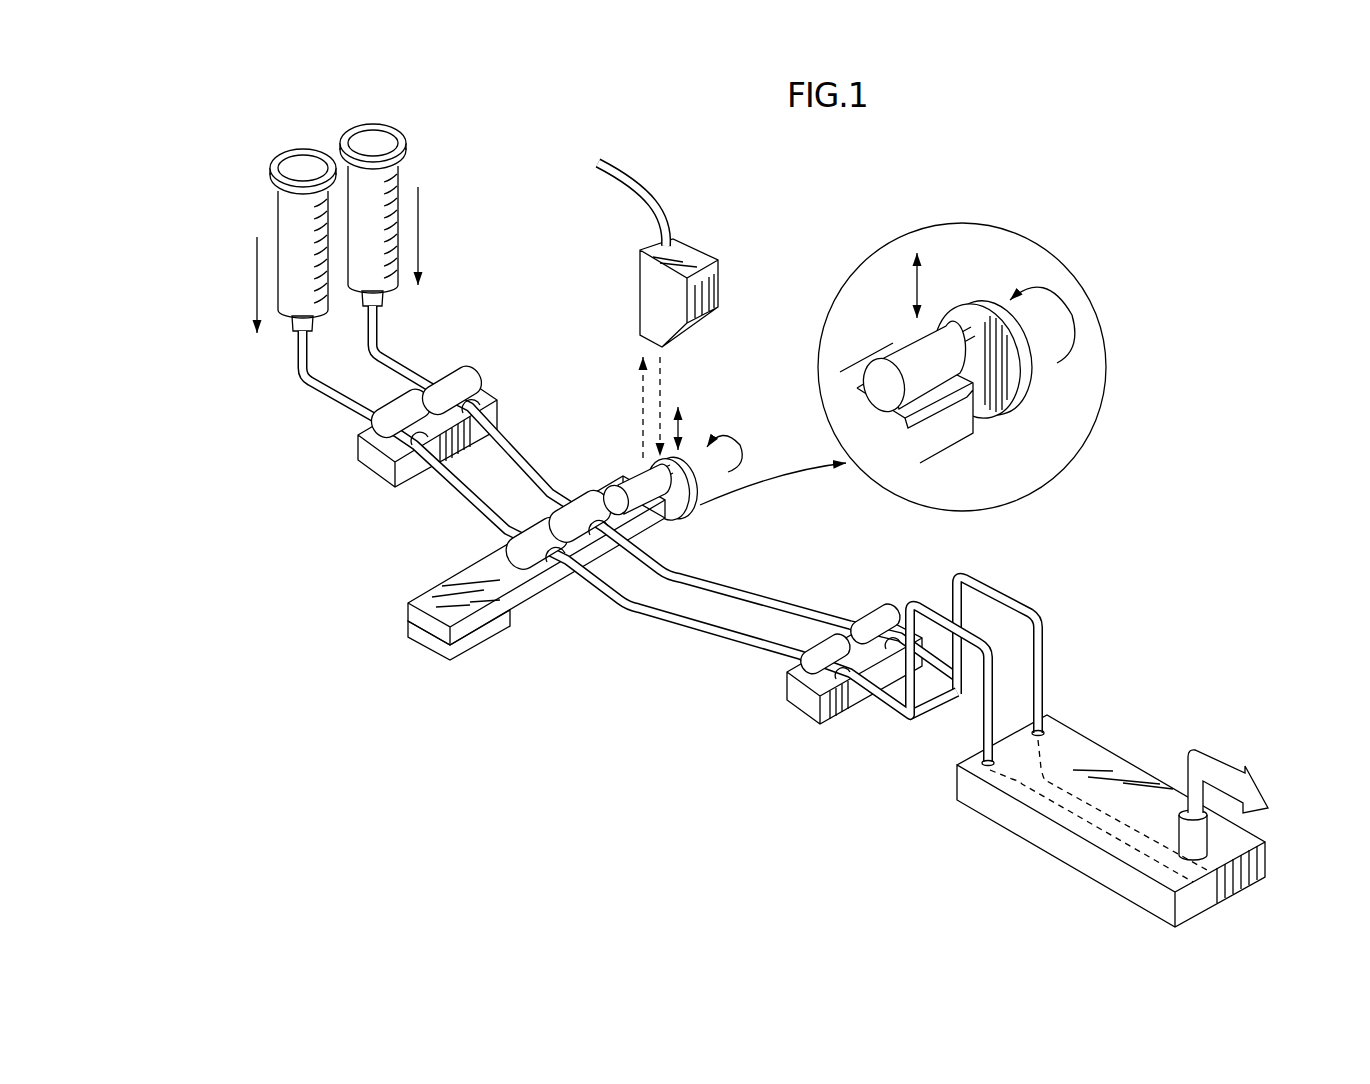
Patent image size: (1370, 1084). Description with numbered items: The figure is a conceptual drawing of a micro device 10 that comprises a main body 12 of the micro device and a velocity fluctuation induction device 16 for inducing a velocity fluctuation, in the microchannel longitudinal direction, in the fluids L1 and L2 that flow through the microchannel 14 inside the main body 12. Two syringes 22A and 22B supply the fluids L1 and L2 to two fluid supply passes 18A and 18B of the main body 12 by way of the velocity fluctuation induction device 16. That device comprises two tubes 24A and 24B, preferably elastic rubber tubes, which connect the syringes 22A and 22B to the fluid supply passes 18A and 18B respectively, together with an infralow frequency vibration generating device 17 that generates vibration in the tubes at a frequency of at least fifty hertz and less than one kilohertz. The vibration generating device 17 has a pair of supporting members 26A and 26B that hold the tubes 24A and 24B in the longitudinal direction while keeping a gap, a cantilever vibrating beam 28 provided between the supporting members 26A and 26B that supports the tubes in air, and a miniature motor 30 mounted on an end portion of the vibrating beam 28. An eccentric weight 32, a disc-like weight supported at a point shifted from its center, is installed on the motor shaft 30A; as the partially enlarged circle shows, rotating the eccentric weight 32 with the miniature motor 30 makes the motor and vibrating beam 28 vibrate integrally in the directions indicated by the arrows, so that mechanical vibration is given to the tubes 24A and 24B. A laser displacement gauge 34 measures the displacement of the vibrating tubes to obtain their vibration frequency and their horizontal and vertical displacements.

The micro device 10 is at (1207, 418).
The main body of the micro device 12 is at (1131, 752).
The microchannel 14 is at (1095, 852).
The velocity fluctuation induction device 16 is at (582, 358).
The infralow frequency vibration generating device 17 is at (486, 688).
The fluid supply pass 18A is at (1040, 767).
The fluid supply pass 18B is at (1020, 784).
The syringe 22A is at (404, 141).
The syringe 22B is at (272, 167).
The tube 24A is at (401, 364).
The tube 24B is at (332, 396).
The supporting member 26A is at (383, 470).
The supporting member 26B is at (799, 702).
The vibrating beam 28 is at (526, 595).
The miniature motor 30 is at (618, 486).
The motor shaft 30A is at (965, 330).
The eccentric weight 32 is at (678, 508).
The laser displacement gauge 34 is at (695, 244).
The fluid L1 is at (256, 280).
The fluid L2 is at (419, 223).